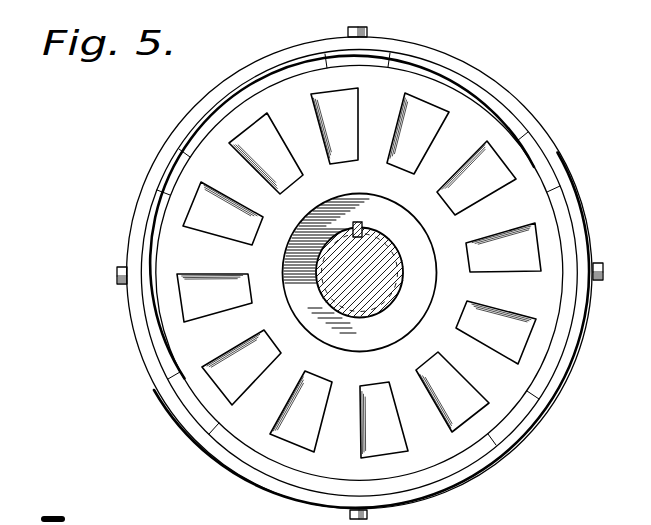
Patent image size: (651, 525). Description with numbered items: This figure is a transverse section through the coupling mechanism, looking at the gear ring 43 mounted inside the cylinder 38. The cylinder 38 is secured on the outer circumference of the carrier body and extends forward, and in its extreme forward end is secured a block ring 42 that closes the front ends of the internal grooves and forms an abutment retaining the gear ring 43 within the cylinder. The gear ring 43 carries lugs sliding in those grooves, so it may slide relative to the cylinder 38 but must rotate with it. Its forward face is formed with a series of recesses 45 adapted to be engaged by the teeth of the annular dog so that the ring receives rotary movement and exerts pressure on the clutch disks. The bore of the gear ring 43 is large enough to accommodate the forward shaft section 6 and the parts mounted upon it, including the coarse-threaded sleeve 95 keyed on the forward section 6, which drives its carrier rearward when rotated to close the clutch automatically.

The cylinder 38 is at (168, 143).
The block ring 42 is at (493, 107).
The gear ring 43 is at (182, 333).
The recesses 45 is at (237, 376).
The sleeve 95 is at (415, 257).
The forward section 6 is at (377, 301).